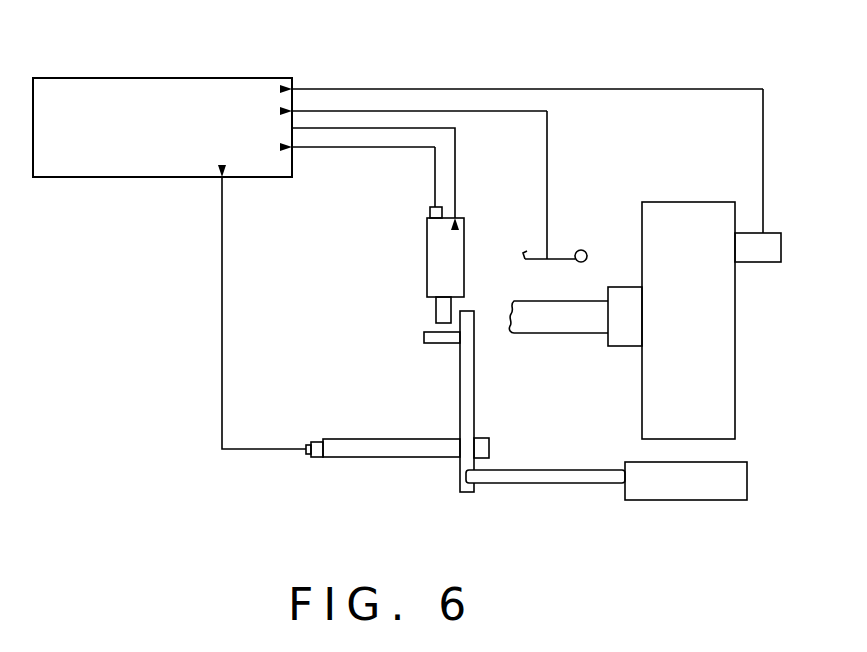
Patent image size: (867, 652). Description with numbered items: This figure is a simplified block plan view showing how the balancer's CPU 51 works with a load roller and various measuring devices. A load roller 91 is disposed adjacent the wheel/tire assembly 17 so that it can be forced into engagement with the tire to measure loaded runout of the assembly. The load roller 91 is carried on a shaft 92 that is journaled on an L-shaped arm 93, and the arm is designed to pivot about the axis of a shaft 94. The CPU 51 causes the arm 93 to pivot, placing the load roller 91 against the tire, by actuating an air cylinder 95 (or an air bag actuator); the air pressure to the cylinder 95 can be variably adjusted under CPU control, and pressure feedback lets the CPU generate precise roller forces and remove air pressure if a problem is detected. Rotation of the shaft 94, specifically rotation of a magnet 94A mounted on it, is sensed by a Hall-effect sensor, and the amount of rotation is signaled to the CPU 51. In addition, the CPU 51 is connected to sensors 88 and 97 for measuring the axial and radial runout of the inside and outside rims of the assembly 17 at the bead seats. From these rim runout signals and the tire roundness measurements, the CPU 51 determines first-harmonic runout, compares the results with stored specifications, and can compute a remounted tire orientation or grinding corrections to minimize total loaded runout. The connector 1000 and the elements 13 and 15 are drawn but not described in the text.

The CPU 51 is at (157, 78).
The connector 1000 is at (432, 207).
The air cylinder 95 is at (427, 272).
The sensor 88 is at (561, 257).
The shaft 13 is at (552, 333).
The bearing block 15 is at (622, 287).
The wheel/tire assembly 17 is at (735, 343).
The sensor 97 is at (771, 233).
The L-shaped arm 93 is at (474, 375).
The shaft 94 is at (352, 457).
The magnet 94A is at (315, 457).
The shaft 92 is at (532, 483).
The load roller 91 is at (685, 500).